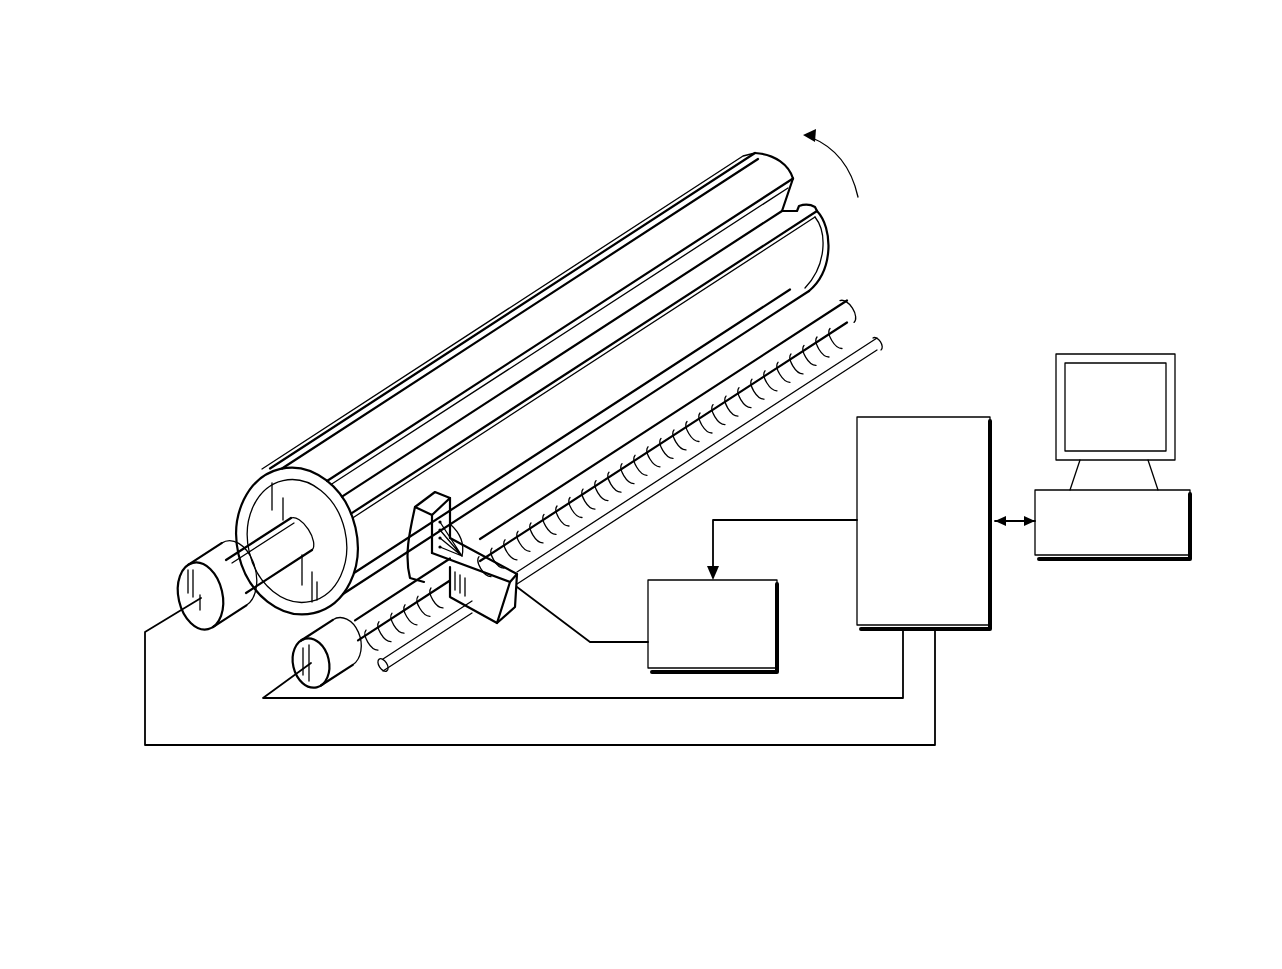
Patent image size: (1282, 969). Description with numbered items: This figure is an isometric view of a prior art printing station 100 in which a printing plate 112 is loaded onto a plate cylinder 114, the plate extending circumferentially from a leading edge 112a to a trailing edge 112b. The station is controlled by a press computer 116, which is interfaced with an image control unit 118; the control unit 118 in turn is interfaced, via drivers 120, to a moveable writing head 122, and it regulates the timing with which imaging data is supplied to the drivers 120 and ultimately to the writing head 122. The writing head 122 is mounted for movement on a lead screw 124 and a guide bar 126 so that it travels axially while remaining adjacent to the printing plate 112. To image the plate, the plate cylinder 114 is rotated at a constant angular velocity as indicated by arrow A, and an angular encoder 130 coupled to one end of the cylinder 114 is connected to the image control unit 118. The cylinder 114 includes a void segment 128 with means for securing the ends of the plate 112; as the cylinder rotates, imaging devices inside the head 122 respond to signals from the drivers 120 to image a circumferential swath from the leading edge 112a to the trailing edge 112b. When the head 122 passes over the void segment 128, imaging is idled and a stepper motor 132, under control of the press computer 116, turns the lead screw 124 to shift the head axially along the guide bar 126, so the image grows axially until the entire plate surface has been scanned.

The printing station 100 is at (528, 124).
The printing plate 112 is at (291, 456).
The leading edge 112a is at (544, 396).
The trailing edge 112b is at (514, 306).
The plate cylinder 114 is at (247, 510).
The press computer 116 is at (1178, 406).
The image control unit 118 is at (937, 417).
The drivers 120 is at (735, 580).
The writing head 122 is at (452, 496).
The lead screw 124 is at (583, 473).
The guide bar 126 is at (424, 648).
The void segment 128 is at (805, 212).
The angular encoder 130 is at (210, 557).
The stepper motor 132 is at (290, 654).